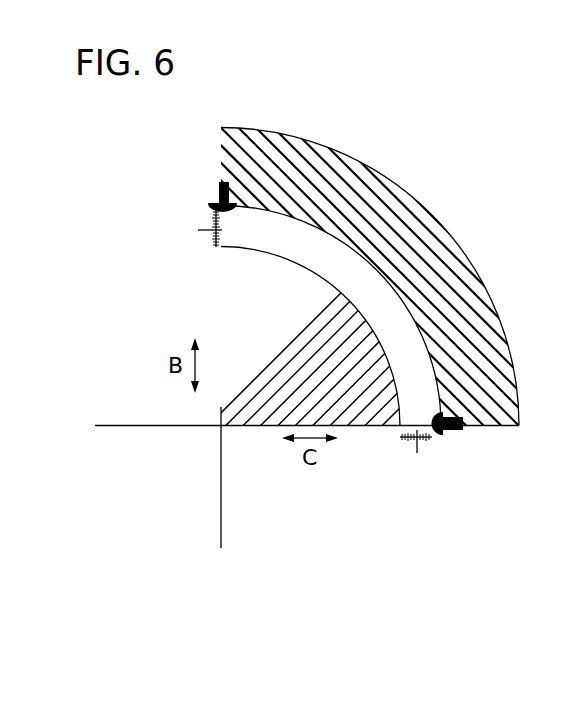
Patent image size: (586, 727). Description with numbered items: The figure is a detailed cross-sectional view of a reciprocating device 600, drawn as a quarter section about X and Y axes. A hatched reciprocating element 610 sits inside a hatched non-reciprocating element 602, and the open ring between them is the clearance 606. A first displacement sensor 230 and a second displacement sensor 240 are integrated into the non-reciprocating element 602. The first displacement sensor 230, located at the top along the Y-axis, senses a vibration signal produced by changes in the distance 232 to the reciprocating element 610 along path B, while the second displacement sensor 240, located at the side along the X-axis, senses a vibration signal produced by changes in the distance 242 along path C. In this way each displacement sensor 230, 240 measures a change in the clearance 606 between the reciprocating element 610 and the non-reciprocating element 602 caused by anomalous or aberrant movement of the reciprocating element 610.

The reciprocating device 600 is at (398, 488).
The non-reciprocating element 602 is at (370, 182).
The clearance 606 is at (363, 288).
The reciprocating element 610 is at (228, 297).
The first displacement sensor 230 is at (213, 202).
The distance 232 is at (198, 223).
The second displacement sensor 240 is at (440, 437).
The distance 242 is at (423, 452).